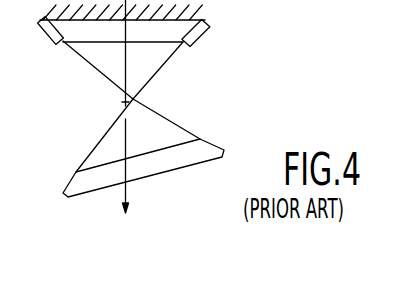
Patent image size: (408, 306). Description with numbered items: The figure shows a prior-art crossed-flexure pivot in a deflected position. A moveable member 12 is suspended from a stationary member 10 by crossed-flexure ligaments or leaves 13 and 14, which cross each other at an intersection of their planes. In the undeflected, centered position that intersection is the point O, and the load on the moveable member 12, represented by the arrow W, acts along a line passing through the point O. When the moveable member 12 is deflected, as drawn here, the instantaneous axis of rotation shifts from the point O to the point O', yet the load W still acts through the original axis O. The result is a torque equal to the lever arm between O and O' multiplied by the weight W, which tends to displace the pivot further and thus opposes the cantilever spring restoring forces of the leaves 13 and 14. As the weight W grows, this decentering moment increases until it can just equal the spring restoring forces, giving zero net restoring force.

The stationary member 10 is at (47, 22).
The moveable member 12 is at (179, 158).
The leaf 13 is at (80, 58).
The leaf 14 is at (158, 68).
The point of leaf intersection O is at (112, 101).
The shifted instantaneous axis of rotation O' is at (146, 98).
The load arrow W is at (128, 207).